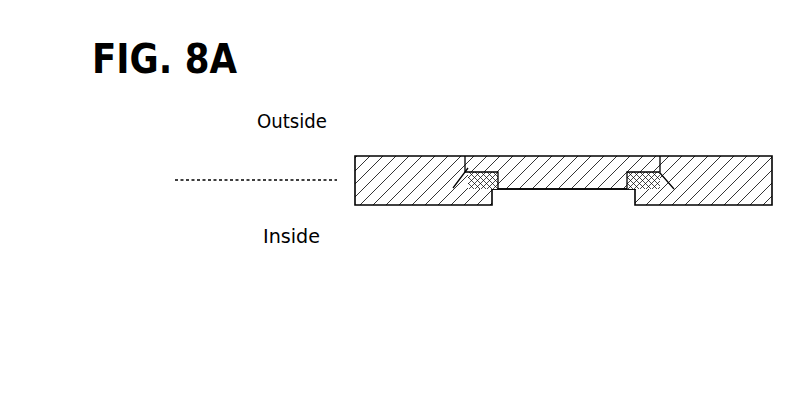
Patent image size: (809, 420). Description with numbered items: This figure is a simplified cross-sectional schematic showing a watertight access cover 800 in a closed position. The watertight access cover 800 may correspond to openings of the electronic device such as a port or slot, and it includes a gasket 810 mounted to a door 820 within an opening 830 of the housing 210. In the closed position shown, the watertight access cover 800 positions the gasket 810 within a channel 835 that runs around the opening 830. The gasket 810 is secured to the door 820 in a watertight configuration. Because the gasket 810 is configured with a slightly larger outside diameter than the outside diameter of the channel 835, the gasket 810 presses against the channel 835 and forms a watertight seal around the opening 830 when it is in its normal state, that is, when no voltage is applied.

The housing 210 is at (394, 156).
The watertight access cover 800 is at (640, 136).
The gasket 810 is at (627, 190).
The door 820 is at (560, 190).
The opening 830 is at (522, 200).
The channel 835 is at (454, 170).